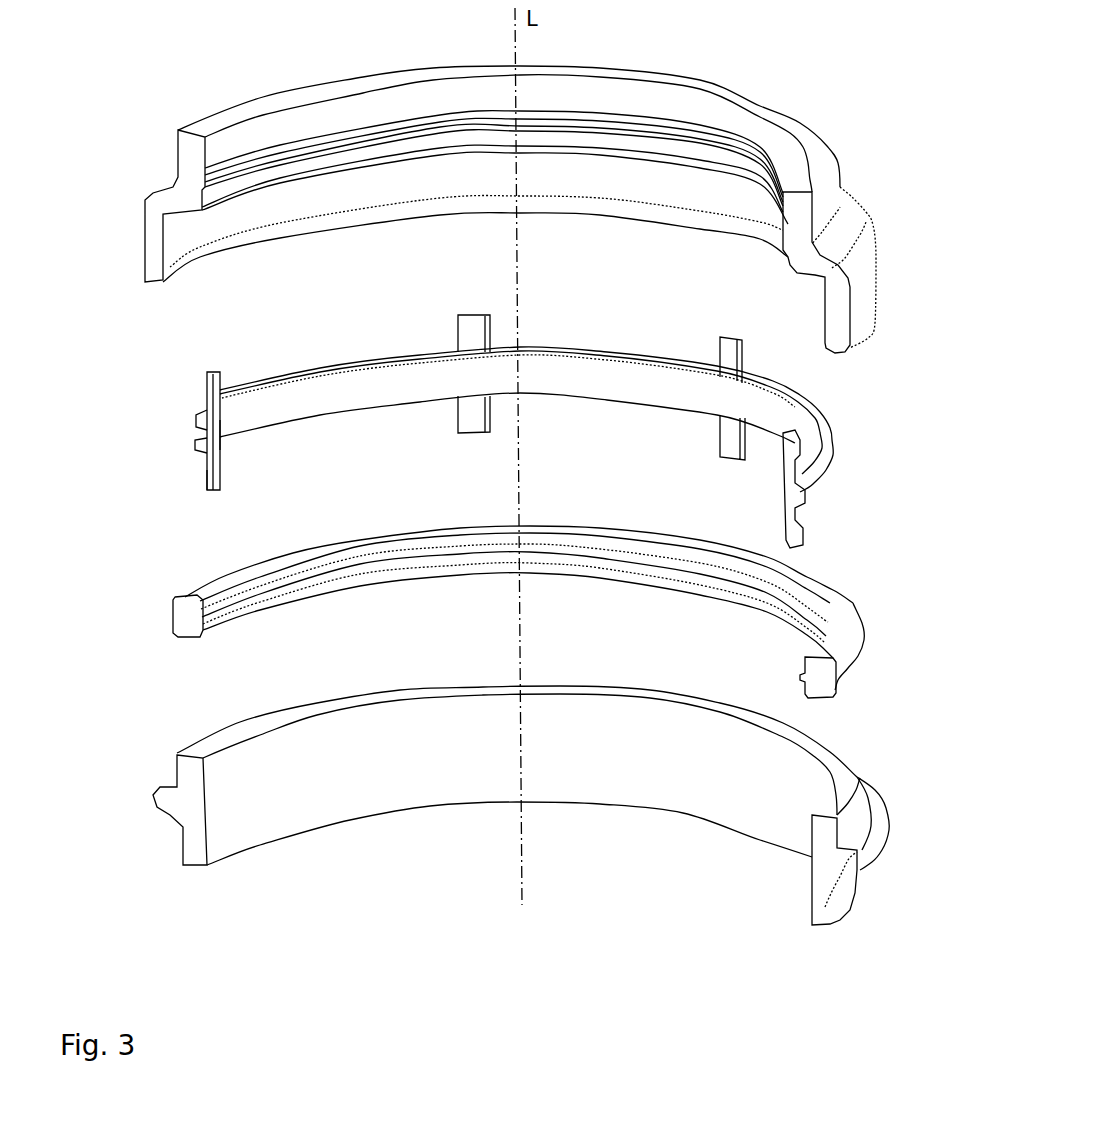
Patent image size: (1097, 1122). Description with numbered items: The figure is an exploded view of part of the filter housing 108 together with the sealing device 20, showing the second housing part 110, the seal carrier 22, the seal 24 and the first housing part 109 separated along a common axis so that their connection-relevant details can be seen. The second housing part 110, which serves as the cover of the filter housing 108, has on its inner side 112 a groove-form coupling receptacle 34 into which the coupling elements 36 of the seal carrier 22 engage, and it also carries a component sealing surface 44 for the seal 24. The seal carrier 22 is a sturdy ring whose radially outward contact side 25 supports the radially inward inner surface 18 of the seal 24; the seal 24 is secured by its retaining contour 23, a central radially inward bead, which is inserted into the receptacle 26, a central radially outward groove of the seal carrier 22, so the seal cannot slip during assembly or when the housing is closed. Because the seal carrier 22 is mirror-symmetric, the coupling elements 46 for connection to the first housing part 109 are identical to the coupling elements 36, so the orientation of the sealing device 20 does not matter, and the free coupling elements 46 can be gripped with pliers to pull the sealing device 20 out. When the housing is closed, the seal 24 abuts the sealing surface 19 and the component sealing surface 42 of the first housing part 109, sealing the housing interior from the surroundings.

The filter housing 108 is at (541, 192).
The second housing part 110 is at (815, 157).
The inner side 112 is at (267, 150).
The coupling receptacle 34 is at (198, 183).
The component sealing surface 44 is at (178, 235).
The sealing device 20 is at (468, 511).
The seal carrier 22 is at (454, 428).
The coupling elements 36 is at (208, 385).
The contact side 25 is at (195, 418).
The sealing surface 19 is at (195, 452).
The coupling elements 46 is at (202, 485).
The receptacle 26 is at (213, 433).
The inner surface 18 is at (468, 619).
The seal 24 is at (183, 620).
The retaining contour 23 is at (204, 632).
The component sealing surface 42 is at (481, 847).
The first housing part 109 is at (823, 897).